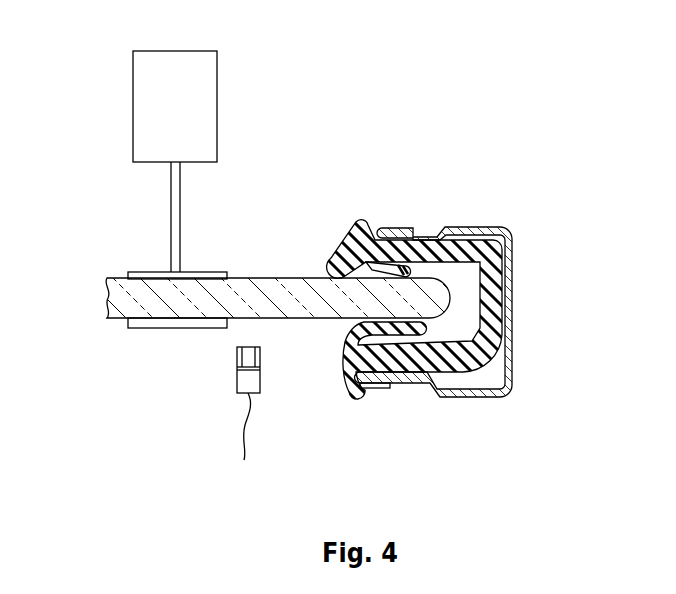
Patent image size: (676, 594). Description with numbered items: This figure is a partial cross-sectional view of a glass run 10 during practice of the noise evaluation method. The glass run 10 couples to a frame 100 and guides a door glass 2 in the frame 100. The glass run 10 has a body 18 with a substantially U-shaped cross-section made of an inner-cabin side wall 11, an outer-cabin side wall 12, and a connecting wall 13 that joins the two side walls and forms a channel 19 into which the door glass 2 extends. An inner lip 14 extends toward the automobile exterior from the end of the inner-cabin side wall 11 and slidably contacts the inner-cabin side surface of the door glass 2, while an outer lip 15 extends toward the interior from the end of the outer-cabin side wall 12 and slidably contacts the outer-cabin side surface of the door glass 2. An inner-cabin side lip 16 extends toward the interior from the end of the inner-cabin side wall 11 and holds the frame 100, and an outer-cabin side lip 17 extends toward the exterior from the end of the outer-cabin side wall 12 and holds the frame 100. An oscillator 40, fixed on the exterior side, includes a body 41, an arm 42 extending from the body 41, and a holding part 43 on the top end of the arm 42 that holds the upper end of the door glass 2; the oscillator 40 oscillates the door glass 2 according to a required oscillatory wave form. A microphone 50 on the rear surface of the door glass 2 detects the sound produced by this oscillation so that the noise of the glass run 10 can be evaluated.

The door glass 2 is at (280, 278).
The glass run 10 is at (400, 311).
The inner-cabin side wall 11 is at (425, 386).
The outer-cabin side wall 12 is at (420, 238).
The connecting wall 13 is at (512, 270).
The inner lip 14 is at (402, 336).
The outer lip 15 is at (372, 238).
The inner-cabin side lip 16 is at (348, 386).
The outer-cabin side lip 17 is at (348, 228).
The body 18 is at (508, 302).
The channel 19 is at (474, 333).
The oscillator 40 is at (202, 179).
The body 41 is at (217, 108).
The arm 42 is at (171, 195).
The holding part 43 is at (158, 272).
The microphone 50 is at (237, 375).
The frame 100 is at (480, 230).